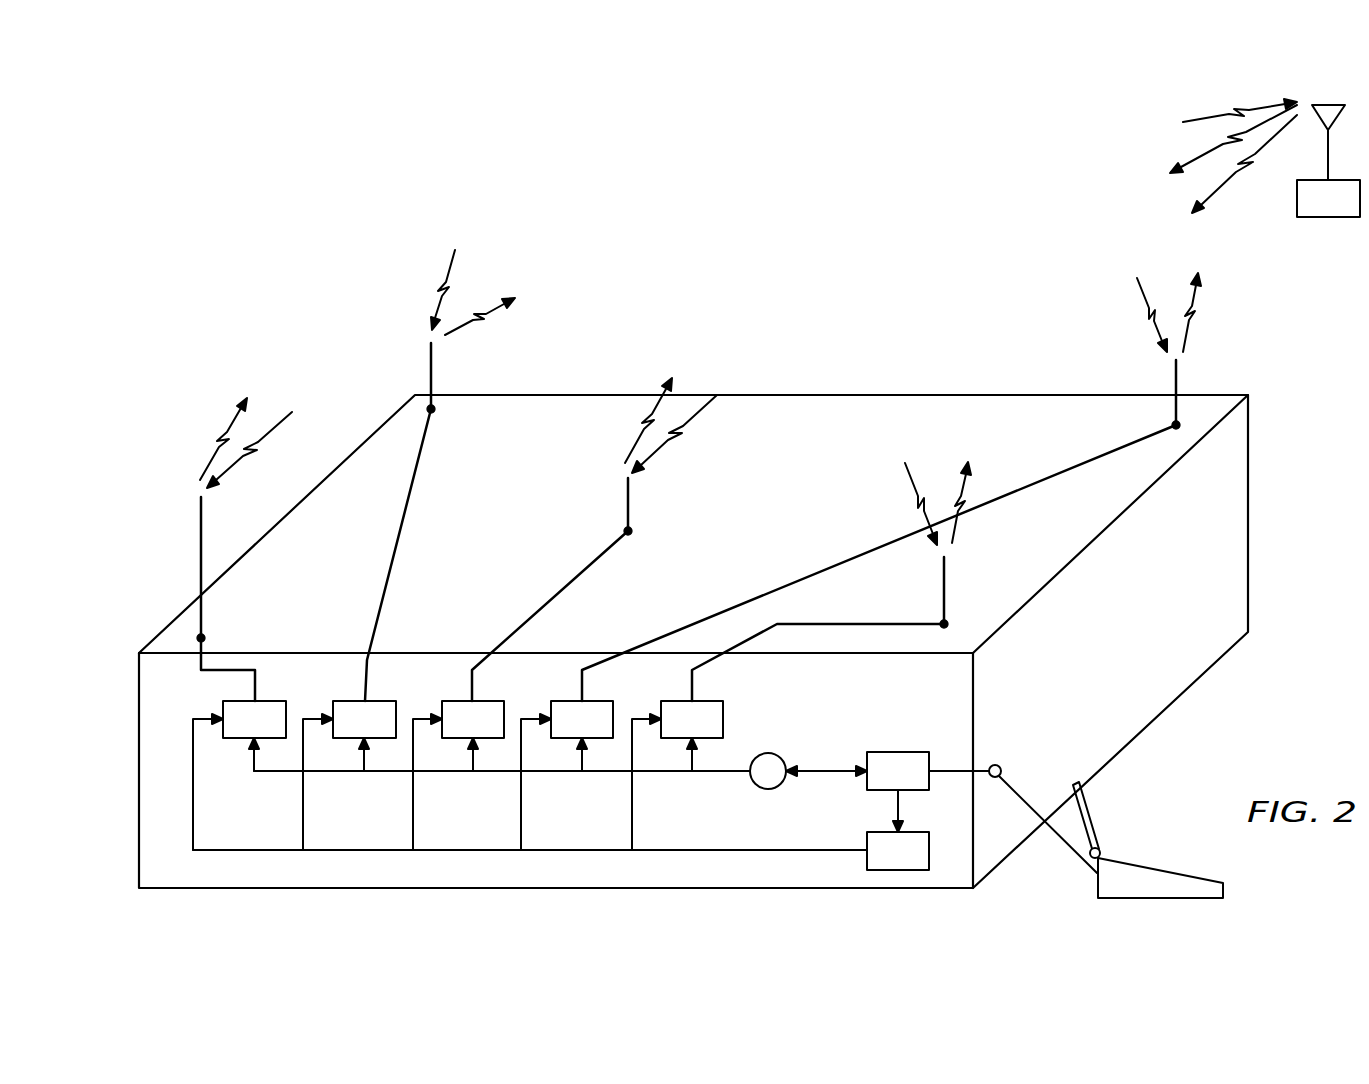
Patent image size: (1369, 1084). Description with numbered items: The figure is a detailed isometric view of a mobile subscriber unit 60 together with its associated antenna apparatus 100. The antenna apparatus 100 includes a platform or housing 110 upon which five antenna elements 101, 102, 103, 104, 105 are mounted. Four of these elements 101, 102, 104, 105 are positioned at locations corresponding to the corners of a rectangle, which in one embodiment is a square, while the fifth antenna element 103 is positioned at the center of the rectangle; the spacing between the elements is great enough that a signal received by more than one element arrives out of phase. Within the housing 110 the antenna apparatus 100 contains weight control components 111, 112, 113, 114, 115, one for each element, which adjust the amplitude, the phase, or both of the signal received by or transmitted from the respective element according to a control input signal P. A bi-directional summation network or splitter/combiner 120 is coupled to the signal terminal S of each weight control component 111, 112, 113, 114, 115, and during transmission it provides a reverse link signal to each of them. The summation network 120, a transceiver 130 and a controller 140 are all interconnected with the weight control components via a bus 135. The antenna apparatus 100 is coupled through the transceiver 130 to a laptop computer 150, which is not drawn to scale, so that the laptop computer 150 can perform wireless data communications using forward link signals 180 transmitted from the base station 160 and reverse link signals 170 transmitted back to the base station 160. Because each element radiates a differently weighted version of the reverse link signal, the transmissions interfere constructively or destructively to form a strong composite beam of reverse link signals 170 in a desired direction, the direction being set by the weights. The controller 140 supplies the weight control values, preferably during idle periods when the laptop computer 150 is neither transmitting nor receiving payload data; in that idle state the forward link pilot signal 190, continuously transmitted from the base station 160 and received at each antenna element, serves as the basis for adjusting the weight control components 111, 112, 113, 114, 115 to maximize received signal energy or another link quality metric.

The antenna apparatus 100 is at (326, 358).
The housing 110 is at (703, 890).
The mobile subscriber unit 60 is at (1249, 498).
The antenna element 101 is at (433, 367).
The antenna element 102 is at (1178, 375).
The antenna element 103 is at (630, 500).
The antenna element 104 is at (201, 556).
The antenna element 105 is at (946, 580).
The weight control component 111 is at (239, 760).
The weight control component 112 is at (349, 760).
The weight control component 113 is at (458, 760).
The weight control component 114 is at (567, 760).
The weight control component 115 is at (677, 760).
The summation network 120 is at (783, 758).
The transceiver 130 is at (887, 792).
The bus 135 is at (655, 773).
The controller 140 is at (561, 851).
The laptop computer 150 is at (1106, 832).
The base station 160 is at (1328, 161).
The reverse link signals 170 is at (748, 321).
The forward link signals 180 is at (752, 330).
The forward link pilot signal 190 is at (1195, 155).